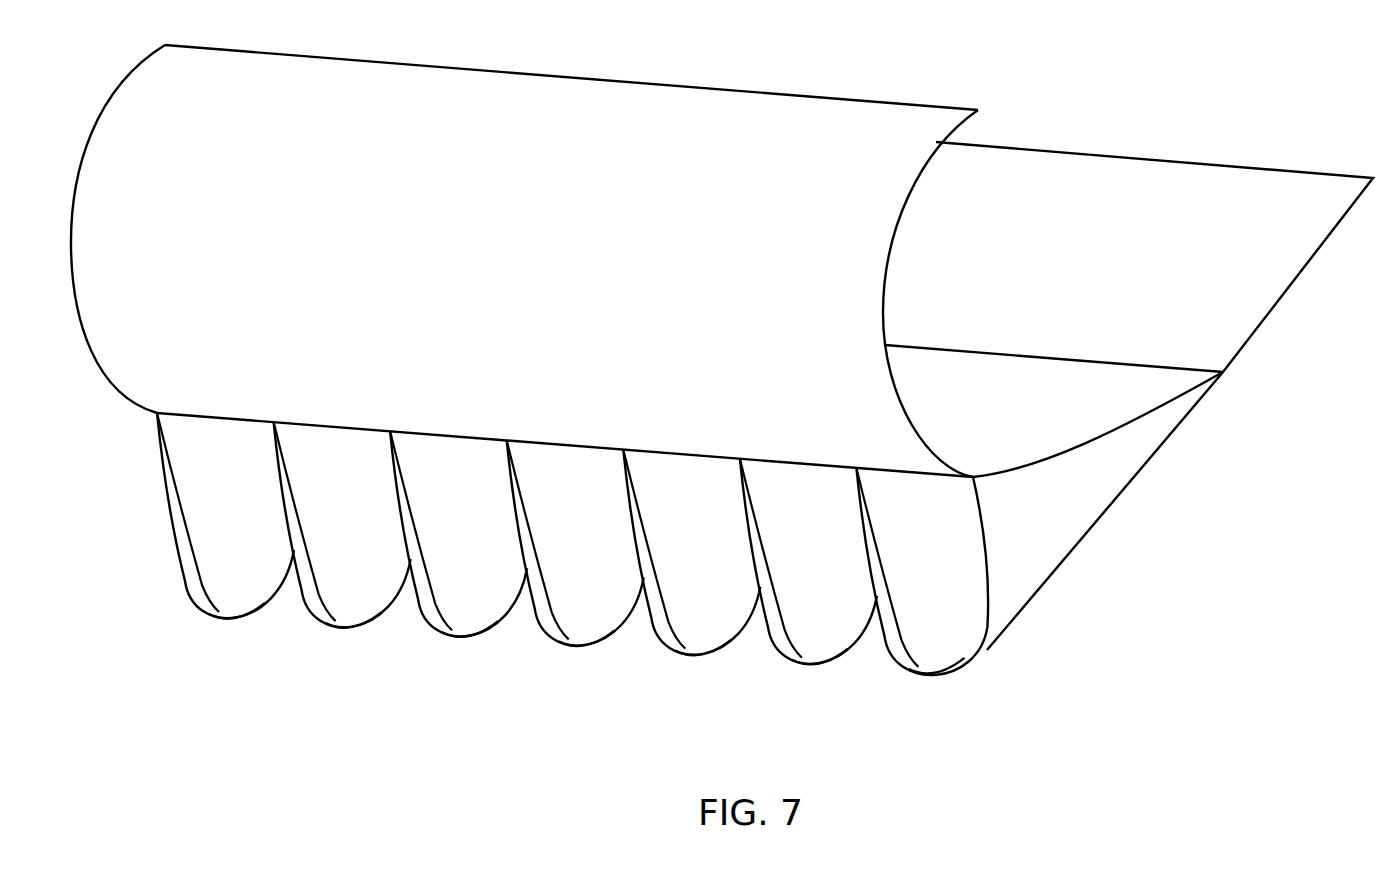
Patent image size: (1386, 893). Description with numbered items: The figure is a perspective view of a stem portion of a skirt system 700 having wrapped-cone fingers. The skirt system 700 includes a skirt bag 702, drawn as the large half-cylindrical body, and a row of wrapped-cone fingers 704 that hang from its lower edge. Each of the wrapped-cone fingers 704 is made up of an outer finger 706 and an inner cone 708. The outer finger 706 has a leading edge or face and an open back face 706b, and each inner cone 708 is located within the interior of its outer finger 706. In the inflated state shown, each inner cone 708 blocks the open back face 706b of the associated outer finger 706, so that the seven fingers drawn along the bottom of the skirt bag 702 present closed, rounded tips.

The skirt system 700 is at (549, 792).
The skirt bag 702 is at (112, 93).
The wrapped-cone fingers 704 is at (572, 588).
The outer finger 706 is at (1132, 480).
The open back face 706b is at (538, 580).
The inner cone 708 is at (601, 640).